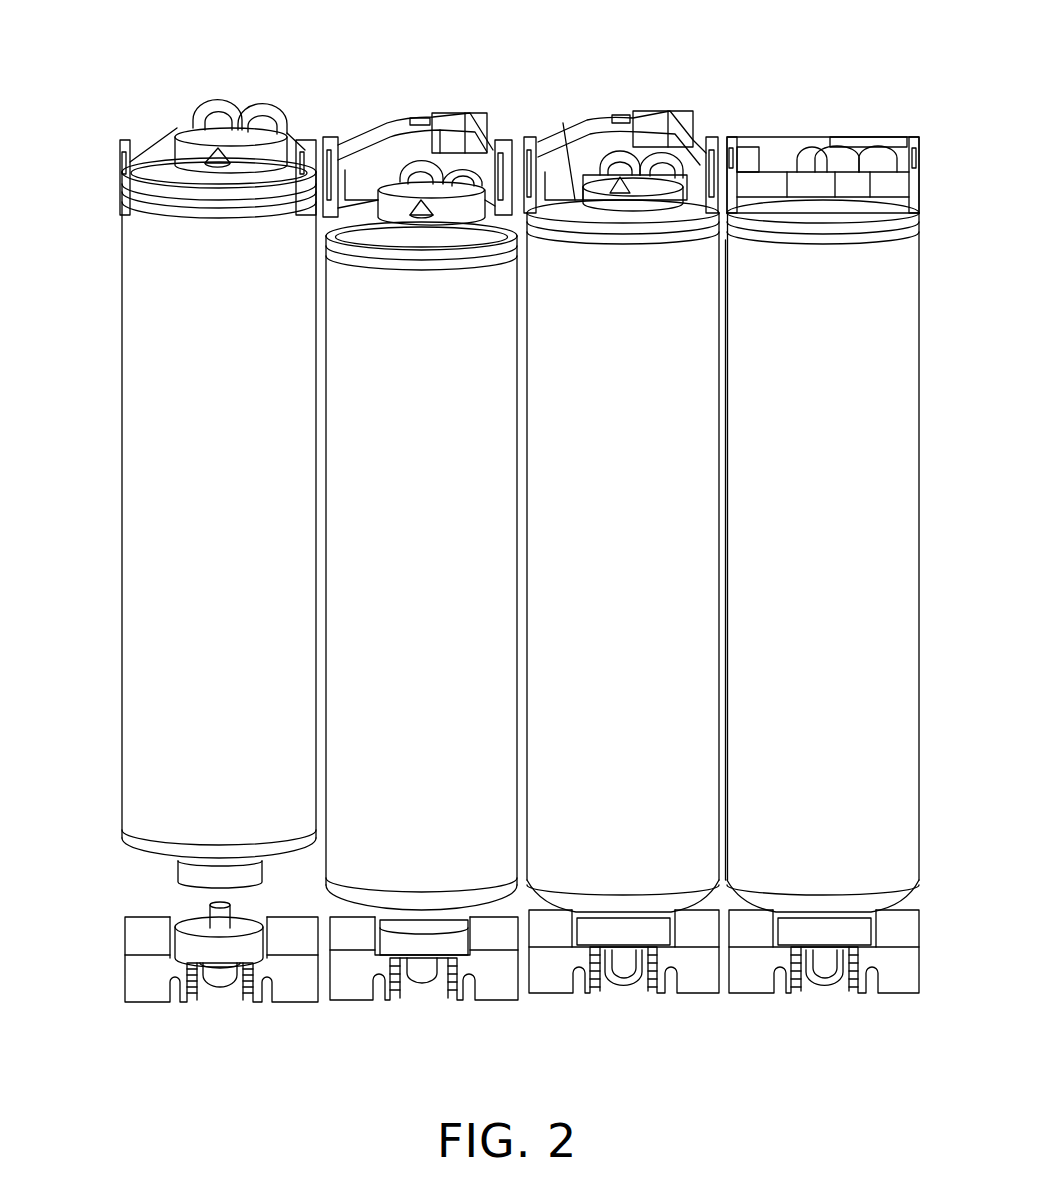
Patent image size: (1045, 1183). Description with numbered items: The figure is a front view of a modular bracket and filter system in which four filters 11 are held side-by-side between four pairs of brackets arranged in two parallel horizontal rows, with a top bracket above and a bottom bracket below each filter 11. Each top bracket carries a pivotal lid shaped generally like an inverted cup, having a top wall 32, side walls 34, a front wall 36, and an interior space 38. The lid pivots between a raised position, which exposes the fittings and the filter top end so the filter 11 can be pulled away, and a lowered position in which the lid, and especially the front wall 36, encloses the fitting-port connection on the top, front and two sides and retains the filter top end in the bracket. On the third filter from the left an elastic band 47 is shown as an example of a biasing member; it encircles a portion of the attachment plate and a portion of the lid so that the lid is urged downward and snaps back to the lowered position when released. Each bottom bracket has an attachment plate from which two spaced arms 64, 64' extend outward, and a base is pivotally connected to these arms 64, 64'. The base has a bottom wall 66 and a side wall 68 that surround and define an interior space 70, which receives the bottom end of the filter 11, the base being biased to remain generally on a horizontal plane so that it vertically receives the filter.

The filter 11 is at (438, 438).
The top wall 32 is at (833, 146).
The side walls 34 is at (482, 128).
The front wall 36 is at (439, 109).
The interior space 38 is at (375, 193).
The elastic band 47 is at (563, 123).
The arm 64 is at (646, 996).
The arm 64' is at (771, 1010).
The bottom wall 66 is at (541, 1013).
The side wall 68 is at (547, 980).
The interior space 70 is at (172, 928).